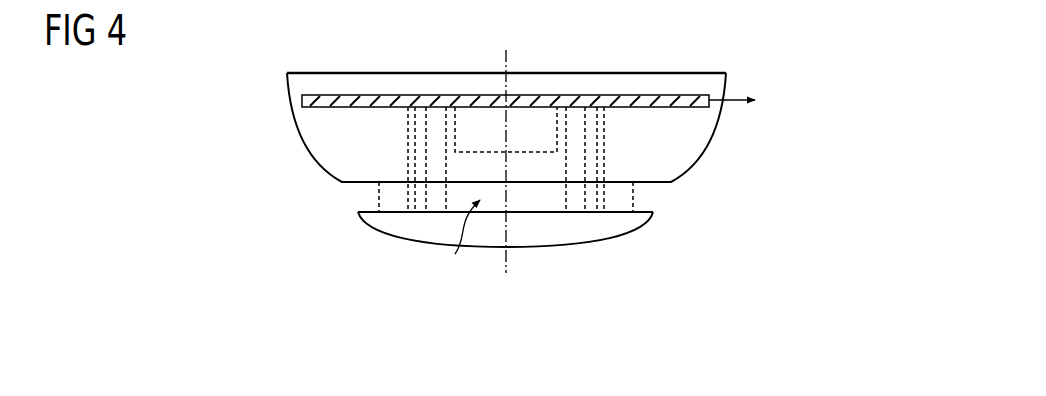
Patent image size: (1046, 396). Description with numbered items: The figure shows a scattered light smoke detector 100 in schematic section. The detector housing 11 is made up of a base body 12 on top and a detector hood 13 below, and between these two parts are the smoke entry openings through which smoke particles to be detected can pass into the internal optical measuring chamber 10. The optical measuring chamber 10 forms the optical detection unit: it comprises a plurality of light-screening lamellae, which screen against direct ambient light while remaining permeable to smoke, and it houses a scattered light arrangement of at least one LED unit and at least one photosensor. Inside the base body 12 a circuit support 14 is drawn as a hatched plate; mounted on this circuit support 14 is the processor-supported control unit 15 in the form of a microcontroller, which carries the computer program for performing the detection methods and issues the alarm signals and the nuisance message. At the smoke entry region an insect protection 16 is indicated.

The scattered light smoke detector 100 is at (742, 46).
The optical measuring chamber 10 is at (410, 130).
The housing 11 is at (531, 164).
The base body 12 is at (687, 169).
The detector hood 13 is at (653, 213).
The circuit support 14 is at (617, 104).
The control unit 15 is at (490, 117).
The insect protection 16 is at (379, 189).